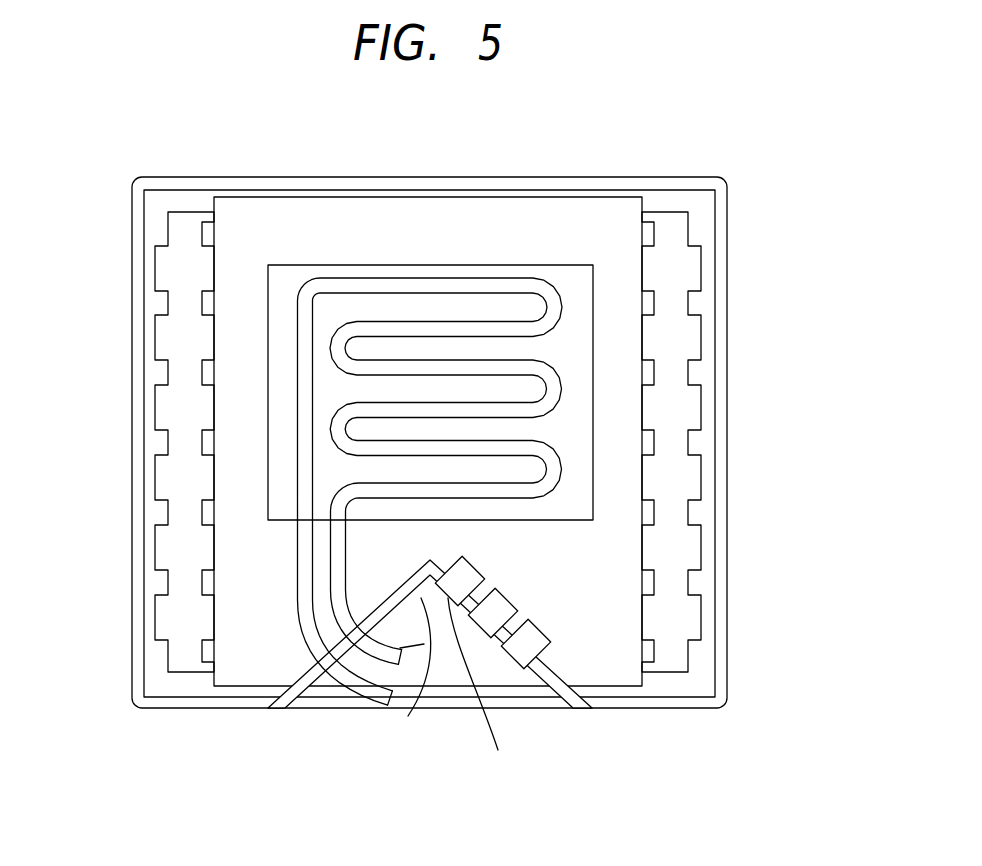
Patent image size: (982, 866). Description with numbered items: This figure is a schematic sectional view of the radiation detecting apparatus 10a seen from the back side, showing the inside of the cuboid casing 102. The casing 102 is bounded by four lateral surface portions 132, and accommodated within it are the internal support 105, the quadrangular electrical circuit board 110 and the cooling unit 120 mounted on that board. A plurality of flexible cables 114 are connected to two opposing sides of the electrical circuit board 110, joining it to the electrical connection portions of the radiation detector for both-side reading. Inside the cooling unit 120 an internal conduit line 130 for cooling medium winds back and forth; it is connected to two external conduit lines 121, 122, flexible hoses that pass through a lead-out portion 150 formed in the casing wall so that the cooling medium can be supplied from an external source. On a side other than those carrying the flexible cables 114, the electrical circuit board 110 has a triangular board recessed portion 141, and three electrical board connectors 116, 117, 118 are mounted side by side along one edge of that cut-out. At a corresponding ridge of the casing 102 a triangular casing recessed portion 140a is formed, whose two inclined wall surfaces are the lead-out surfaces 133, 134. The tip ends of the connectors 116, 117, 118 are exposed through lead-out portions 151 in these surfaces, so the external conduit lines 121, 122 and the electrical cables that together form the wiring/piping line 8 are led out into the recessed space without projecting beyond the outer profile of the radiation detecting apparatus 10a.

The radiation detecting apparatus 10a is at (738, 152).
The casing 102 is at (348, 190).
The internal support 105 is at (672, 213).
The electrical circuit board 110 is at (522, 197).
The flexible cable 114 is at (702, 260).
The electrical board connector 116 is at (520, 657).
The electrical board connector 117 is at (480, 633).
The electrical board connector 118 is at (482, 689).
The cooling unit 120 is at (279, 282).
The external conduit line 121 is at (337, 677).
The external conduit line 122 is at (362, 677).
The internal conduit line 130 is at (420, 278).
The lateral surface portion 132 is at (163, 712).
The lead-out surface 133 is at (420, 645).
The lead-out surface 134 is at (560, 690).
The casing recessed portion 140a is at (440, 693).
The board recessed portion 141 is at (298, 710).
The lead-out portion 150 is at (322, 660).
The lead-out portion 151 is at (470, 590).
The wiring/piping line 8 is at (332, 667).